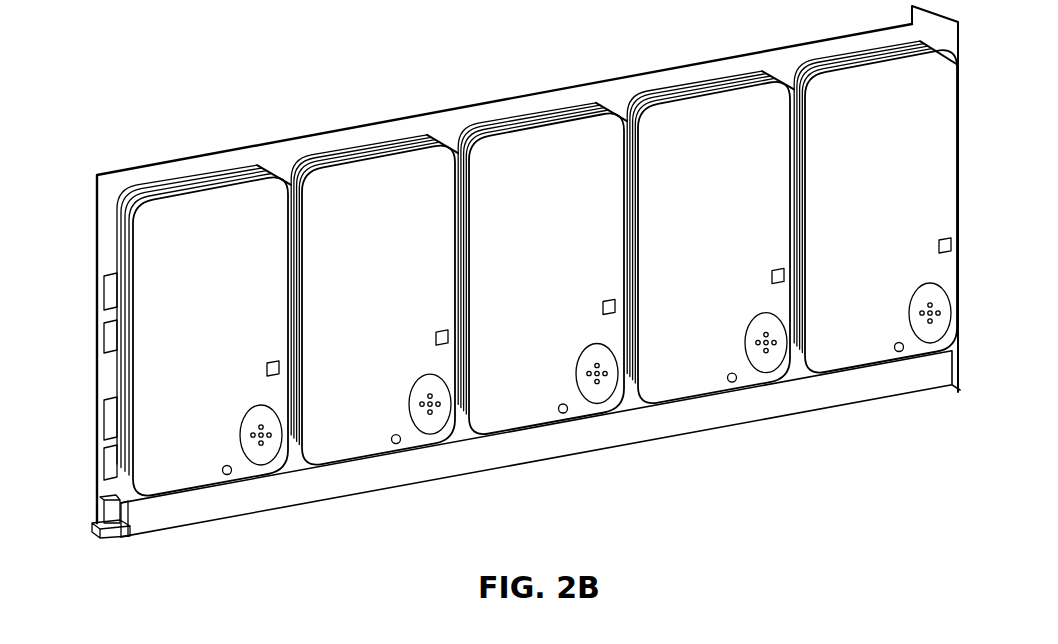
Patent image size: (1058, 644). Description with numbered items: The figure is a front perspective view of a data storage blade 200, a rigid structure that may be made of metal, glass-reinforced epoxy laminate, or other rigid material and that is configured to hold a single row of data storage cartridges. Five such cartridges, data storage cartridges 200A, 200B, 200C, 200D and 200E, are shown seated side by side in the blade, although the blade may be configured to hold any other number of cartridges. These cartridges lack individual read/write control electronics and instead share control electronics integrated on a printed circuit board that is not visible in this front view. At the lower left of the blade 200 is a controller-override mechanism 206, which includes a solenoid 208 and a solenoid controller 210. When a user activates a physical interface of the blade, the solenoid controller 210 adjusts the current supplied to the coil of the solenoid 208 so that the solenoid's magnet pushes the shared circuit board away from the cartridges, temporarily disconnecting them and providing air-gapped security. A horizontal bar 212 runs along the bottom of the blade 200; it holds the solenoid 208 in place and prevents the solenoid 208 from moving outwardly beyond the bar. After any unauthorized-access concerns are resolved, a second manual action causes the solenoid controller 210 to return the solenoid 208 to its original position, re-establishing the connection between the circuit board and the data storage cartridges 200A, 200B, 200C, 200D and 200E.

The data storage blade 200 is at (170, 101).
The data storage cartridge 200A is at (853, 149).
The data storage cartridge 200B is at (686, 178).
The data storage cartridge 200C is at (514, 206).
The data storage cartridge 200D is at (343, 234).
The data storage cartridge 200E is at (176, 257).
The controller-override mechanism 206 is at (88, 548).
The solenoid 208 is at (99, 507).
The solenoid controller 210 is at (103, 517).
The horizontal bar 212 is at (835, 383).